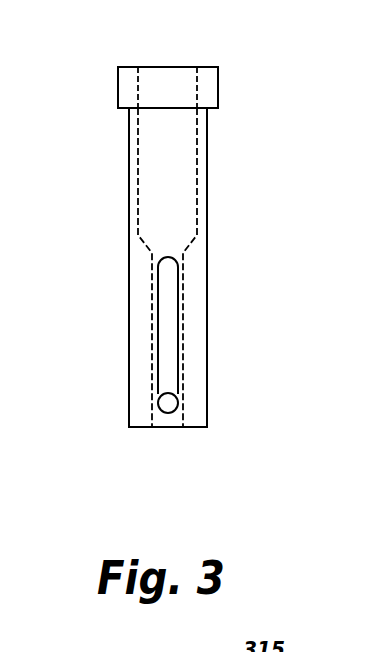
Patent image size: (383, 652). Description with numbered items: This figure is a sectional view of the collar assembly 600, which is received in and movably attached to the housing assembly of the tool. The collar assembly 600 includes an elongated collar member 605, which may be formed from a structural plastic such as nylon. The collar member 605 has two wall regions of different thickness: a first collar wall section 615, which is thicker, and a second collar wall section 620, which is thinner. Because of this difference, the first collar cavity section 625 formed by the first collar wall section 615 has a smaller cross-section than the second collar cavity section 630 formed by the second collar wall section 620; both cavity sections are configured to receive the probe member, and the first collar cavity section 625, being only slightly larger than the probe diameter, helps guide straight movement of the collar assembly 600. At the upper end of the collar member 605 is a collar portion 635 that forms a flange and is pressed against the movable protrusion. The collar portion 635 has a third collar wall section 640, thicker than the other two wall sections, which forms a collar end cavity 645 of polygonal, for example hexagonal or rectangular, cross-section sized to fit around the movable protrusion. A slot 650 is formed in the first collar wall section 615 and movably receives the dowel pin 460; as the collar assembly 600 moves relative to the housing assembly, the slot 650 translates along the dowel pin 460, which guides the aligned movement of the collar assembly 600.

The collar assembly 600 is at (177, 257).
The collar member 605 is at (207, 285).
The first collar wall section 615 is at (185, 327).
The second collar wall section 620 is at (197, 172).
The first collar cavity section 625 is at (163, 417).
The second collar cavity section 630 is at (172, 197).
The collar portion 635 is at (218, 85).
The third collar wall section 640 is at (130, 88).
The collar end cavity 645 is at (167, 97).
The slot 650 is at (168, 318).
The dowel pin 460 is at (168, 403).